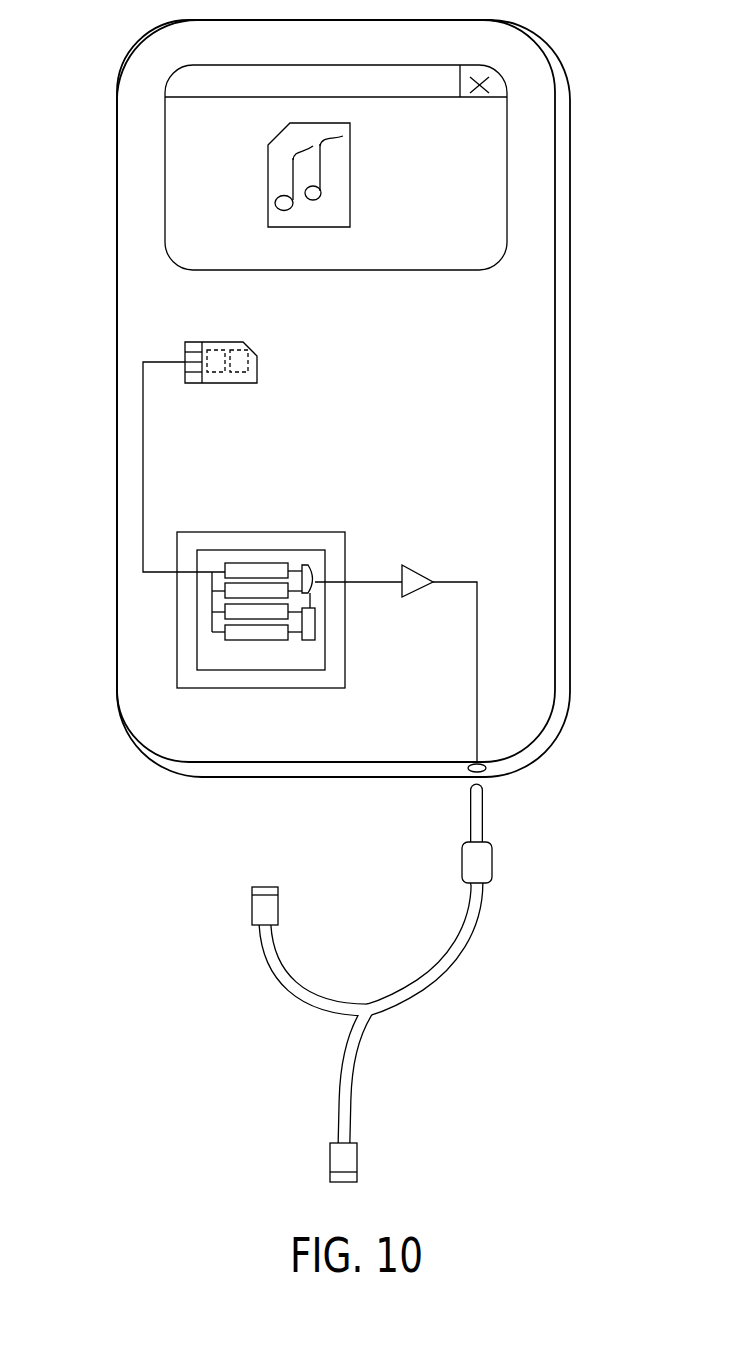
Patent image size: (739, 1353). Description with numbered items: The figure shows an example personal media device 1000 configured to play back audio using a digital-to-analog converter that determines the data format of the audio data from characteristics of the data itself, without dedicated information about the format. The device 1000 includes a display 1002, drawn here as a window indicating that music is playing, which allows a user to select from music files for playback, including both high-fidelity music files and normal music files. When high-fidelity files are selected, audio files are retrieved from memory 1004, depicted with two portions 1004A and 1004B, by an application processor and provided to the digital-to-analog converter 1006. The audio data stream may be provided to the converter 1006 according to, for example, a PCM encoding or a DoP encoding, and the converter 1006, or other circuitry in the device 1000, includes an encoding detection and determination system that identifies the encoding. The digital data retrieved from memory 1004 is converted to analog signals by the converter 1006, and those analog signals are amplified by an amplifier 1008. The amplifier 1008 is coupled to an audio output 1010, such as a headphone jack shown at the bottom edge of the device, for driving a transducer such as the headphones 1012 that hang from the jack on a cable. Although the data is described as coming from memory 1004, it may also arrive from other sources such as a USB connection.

The personal media device 1000 is at (550, 65).
The display 1002 is at (506, 172).
The memory 1004 is at (257, 362).
The first memory portion 1004A is at (216, 374).
The second memory portion 1004B is at (239, 374).
The digital-to-analog converter 1006 is at (177, 638).
The amplifier 1008 is at (410, 573).
The audio output 1010 is at (486, 771).
The headphones 1012 is at (483, 860).